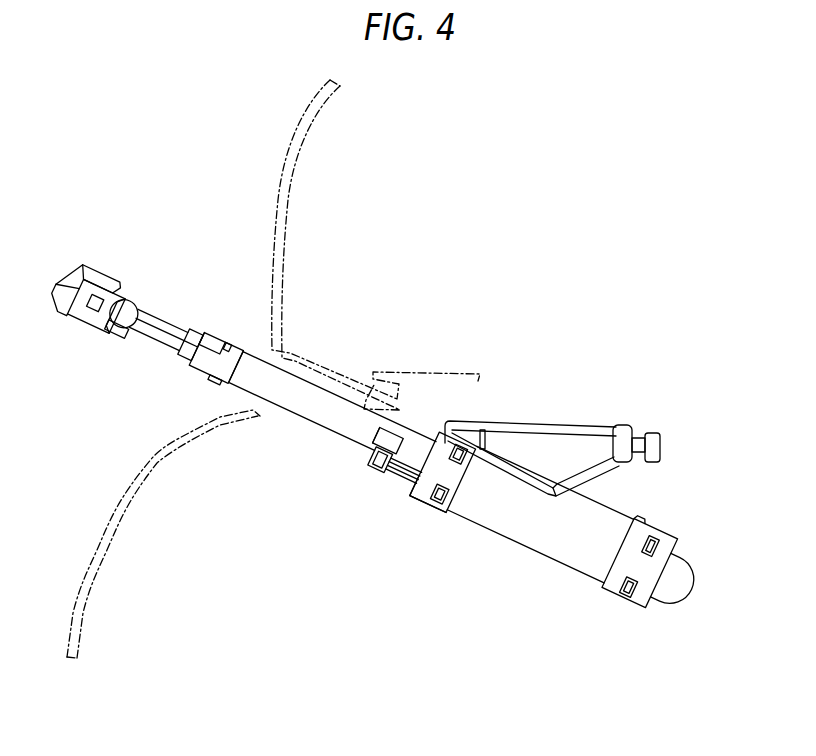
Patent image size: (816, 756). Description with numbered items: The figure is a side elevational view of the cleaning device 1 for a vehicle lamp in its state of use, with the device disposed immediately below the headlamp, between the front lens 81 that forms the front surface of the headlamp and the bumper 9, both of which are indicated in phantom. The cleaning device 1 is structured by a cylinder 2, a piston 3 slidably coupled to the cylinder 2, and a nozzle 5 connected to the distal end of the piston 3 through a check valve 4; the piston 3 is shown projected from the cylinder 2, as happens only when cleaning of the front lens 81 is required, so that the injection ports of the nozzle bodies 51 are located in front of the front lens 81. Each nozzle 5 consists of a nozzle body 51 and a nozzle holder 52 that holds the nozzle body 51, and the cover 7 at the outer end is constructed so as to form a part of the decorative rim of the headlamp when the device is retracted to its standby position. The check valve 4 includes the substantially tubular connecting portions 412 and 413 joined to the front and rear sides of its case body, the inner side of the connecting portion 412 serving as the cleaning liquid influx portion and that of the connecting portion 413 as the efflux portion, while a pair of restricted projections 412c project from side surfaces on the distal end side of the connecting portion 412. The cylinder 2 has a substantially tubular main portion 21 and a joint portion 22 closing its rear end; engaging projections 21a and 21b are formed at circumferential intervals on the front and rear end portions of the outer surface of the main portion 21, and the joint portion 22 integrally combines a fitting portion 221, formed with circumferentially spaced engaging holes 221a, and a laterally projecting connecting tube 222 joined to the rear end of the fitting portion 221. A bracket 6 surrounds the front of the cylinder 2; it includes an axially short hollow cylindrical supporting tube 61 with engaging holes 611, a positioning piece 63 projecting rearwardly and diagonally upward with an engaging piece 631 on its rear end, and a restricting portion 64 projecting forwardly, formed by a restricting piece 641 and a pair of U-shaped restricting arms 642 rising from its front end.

The cleaning device 1 is at (496, 576).
The cylinder 2 is at (568, 555).
The piston 3 is at (317, 417).
The check valve 4 is at (157, 343).
The nozzle 5 is at (112, 315).
The bracket 6 is at (477, 487).
The cover 7 is at (76, 272).
The bumper 9 is at (127, 497).
The main portion 21 is at (577, 507).
The engaging projections 21a is at (446, 422).
The engaging projections 21b is at (642, 525).
The joint portion 22 is at (650, 607).
The nozzle body 51 is at (128, 296).
The nozzle holder 52 is at (112, 333).
The supporting tube 61 is at (410, 497).
The positioning piece 63 is at (528, 428).
The restricting portion 64 is at (386, 484).
The front lens 81 is at (293, 127).
The fitting portion 221 is at (672, 546).
The engaging holes 221a is at (612, 590).
The connecting tube 222 is at (686, 593).
The connecting portion 412 is at (217, 338).
The restricted projections 412c is at (217, 332).
The connecting portion 413 is at (150, 320).
The engaging holes 611 is at (422, 498).
The engaging piece 631 is at (657, 433).
The restricting piece 641 is at (378, 478).
The restricting arms 642 is at (410, 428).